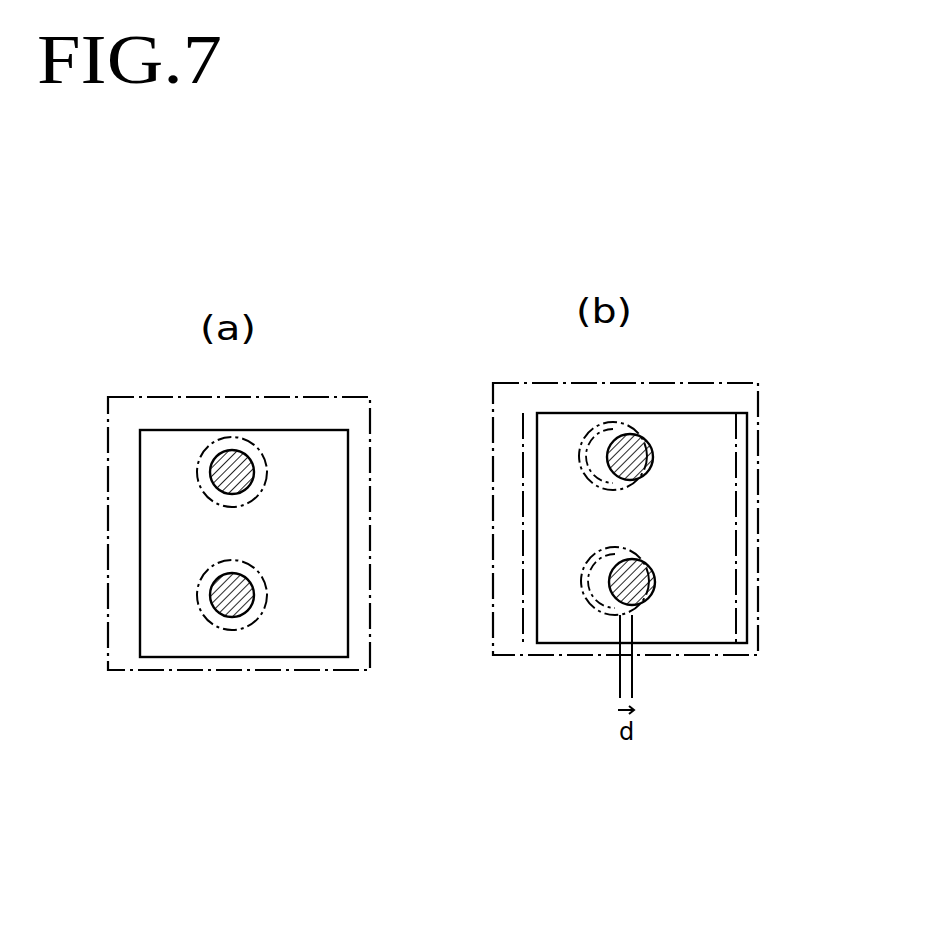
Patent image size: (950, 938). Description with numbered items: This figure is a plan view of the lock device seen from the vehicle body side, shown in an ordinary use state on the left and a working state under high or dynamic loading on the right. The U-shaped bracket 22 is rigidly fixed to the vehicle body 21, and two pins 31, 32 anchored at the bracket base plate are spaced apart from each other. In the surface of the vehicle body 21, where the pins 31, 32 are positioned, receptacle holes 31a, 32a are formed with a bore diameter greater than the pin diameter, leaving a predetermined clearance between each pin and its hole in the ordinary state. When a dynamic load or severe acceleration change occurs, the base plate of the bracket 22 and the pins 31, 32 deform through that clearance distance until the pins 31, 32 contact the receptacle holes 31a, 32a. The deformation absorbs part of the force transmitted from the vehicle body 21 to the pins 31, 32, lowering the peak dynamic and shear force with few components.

The vehicle body 21 is at (350, 664).
The U-shaped bracket 22 is at (186, 640).
The pin 31 is at (204, 462).
The receptacle hole 31a is at (256, 484).
The pin 32 is at (204, 595).
The receptacle hole 32a is at (256, 602).